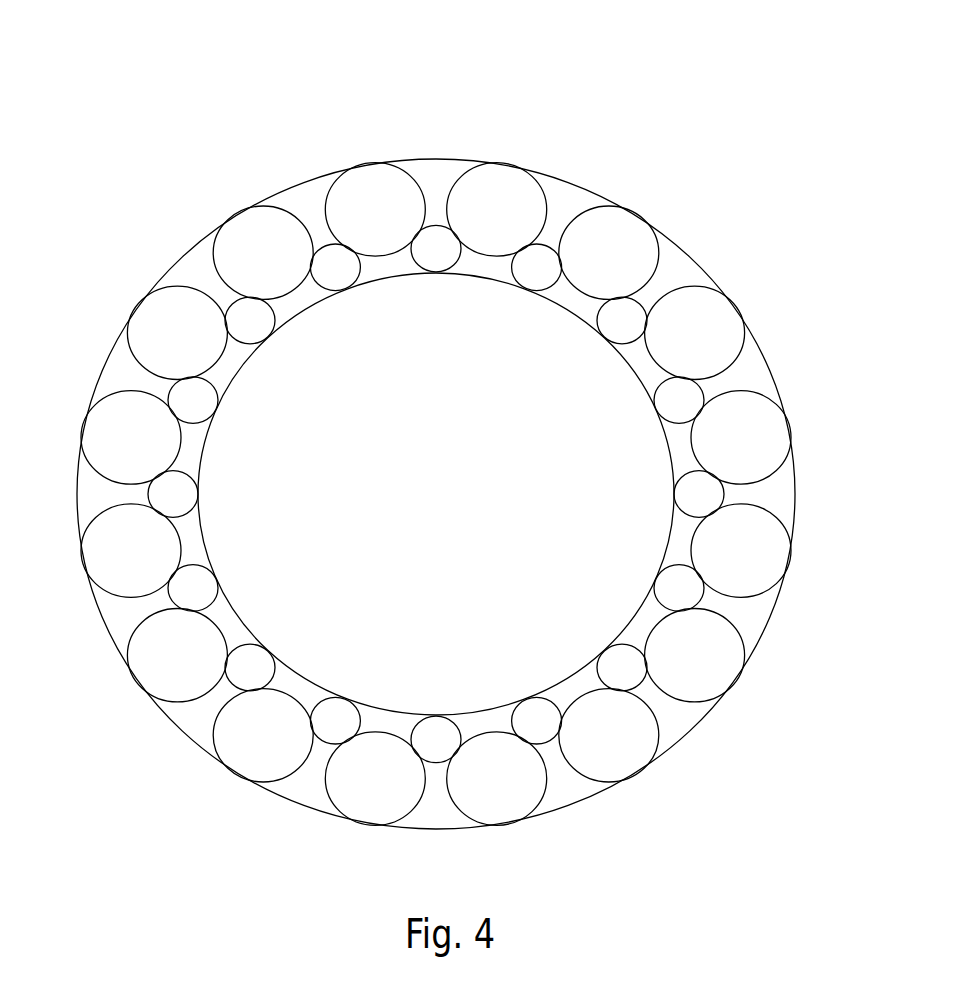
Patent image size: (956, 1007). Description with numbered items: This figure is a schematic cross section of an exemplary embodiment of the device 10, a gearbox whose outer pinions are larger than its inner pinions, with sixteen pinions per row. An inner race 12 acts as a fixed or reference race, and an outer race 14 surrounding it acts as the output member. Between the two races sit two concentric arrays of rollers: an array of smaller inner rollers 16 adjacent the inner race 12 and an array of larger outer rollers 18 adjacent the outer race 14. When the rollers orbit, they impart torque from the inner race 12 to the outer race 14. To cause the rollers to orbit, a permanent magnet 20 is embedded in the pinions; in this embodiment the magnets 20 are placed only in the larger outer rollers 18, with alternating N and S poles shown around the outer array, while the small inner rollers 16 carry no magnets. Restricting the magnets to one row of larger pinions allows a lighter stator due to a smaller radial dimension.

The device 10 is at (405, 41).
The inner race 12 is at (386, 282).
The outer race 14 is at (583, 183).
The inner rollers 16 is at (545, 288).
The outer rollers 18 is at (532, 195).
The permanent magnet 20 is at (252, 237).